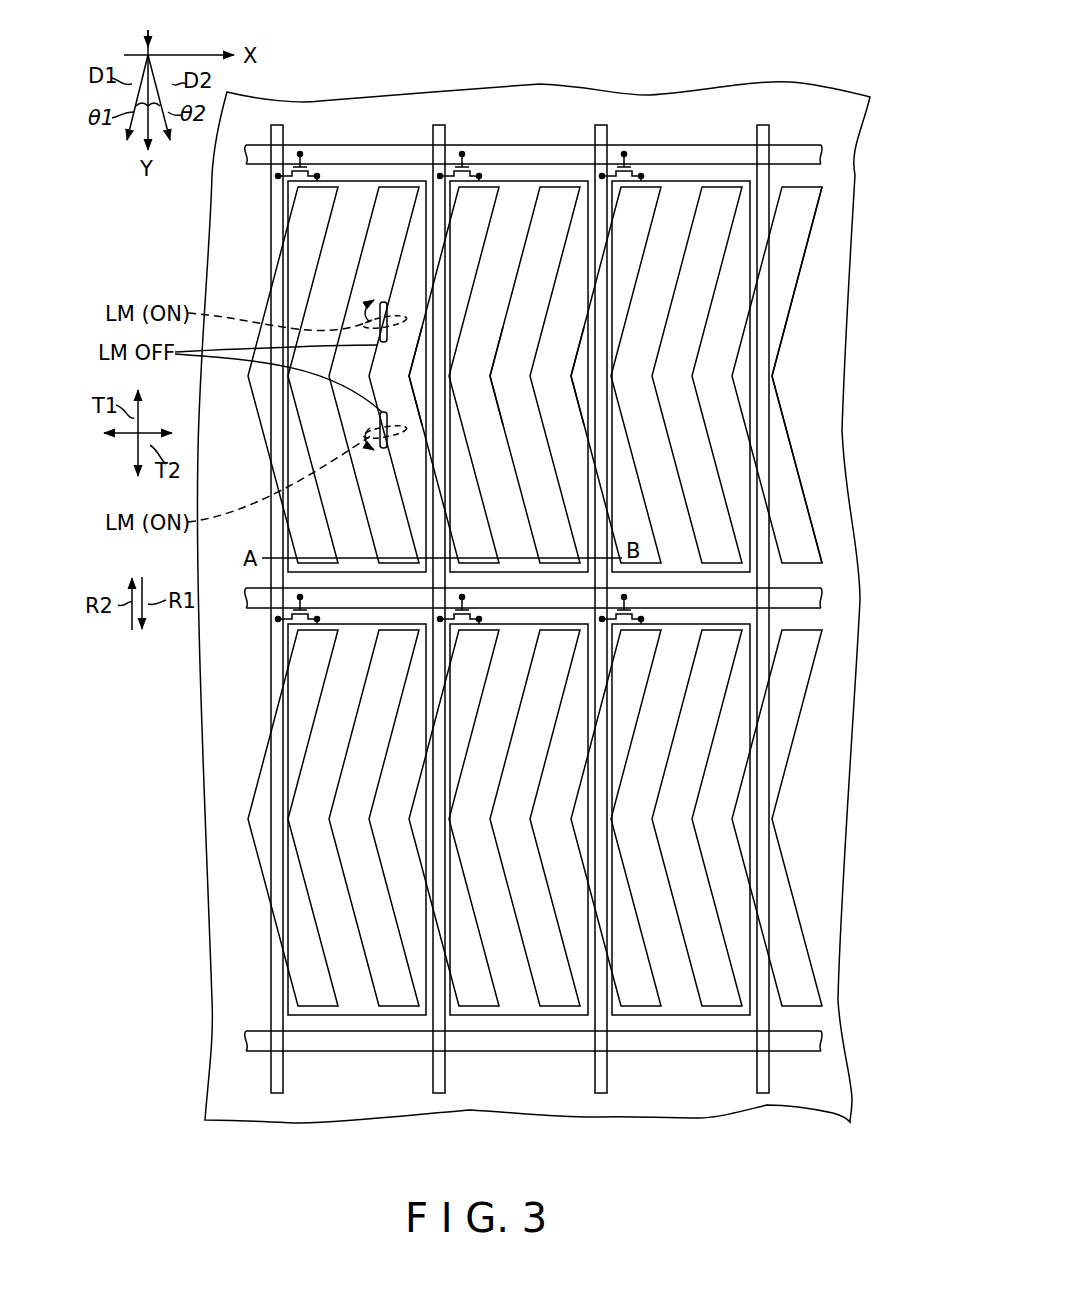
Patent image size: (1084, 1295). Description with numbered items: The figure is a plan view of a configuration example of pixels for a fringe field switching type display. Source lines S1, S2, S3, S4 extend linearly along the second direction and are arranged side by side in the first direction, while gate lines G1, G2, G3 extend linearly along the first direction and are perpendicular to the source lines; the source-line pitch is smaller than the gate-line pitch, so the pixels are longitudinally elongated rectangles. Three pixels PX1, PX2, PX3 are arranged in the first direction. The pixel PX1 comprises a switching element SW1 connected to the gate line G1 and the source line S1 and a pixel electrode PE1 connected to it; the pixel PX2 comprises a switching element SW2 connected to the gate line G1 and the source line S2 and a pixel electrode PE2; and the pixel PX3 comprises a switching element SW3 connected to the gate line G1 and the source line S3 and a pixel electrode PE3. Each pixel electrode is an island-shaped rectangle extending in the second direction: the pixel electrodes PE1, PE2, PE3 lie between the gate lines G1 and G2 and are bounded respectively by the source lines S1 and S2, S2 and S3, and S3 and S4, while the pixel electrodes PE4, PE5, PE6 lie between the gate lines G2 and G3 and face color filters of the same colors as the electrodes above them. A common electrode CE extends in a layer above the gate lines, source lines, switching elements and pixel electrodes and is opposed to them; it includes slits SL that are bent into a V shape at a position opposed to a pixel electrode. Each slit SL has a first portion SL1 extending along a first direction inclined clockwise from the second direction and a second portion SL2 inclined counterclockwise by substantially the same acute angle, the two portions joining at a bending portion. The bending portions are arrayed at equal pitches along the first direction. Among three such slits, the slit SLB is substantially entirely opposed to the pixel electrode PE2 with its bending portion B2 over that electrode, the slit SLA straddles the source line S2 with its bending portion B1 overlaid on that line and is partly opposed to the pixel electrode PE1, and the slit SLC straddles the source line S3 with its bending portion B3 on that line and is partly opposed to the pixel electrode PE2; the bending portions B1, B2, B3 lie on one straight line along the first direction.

The common electrode CE is at (840, 947).
The gate line G1 is at (822, 152).
The gate line G2 is at (822, 598).
The gate line G3 is at (822, 1040).
The source line S1 is at (277, 1093).
The source line S2 is at (439, 1093).
The source line S3 is at (601, 1093).
The source line S4 is at (763, 1093).
The pixel PX1 is at (351, 311).
The pixel PX2 is at (523, 304).
The pixel PX3 is at (685, 309).
The switching element SW1 is at (318, 167).
The switching element SW2 is at (480, 167).
The switching element SW3 is at (642, 167).
The pixel electrode PE1 is at (348, 181).
The pixel electrode PE2 is at (575, 181).
The pixel electrode PE3 is at (735, 181).
The pixel electrode PE4 is at (350, 1015).
The pixel electrode PE5 is at (512, 1015).
The pixel electrode PE6 is at (675, 1015).
The slit SL is at (805, 268).
The first portion SL1 is at (788, 320).
The second portion SL2 is at (795, 450).
The slit SLA is at (495, 236).
The slit SLB is at (528, 214).
The slit SLC is at (661, 211).
The bending portion B1 is at (421, 380).
The bending portion B2 is at (507, 378).
The bending portion B3 is at (585, 378).